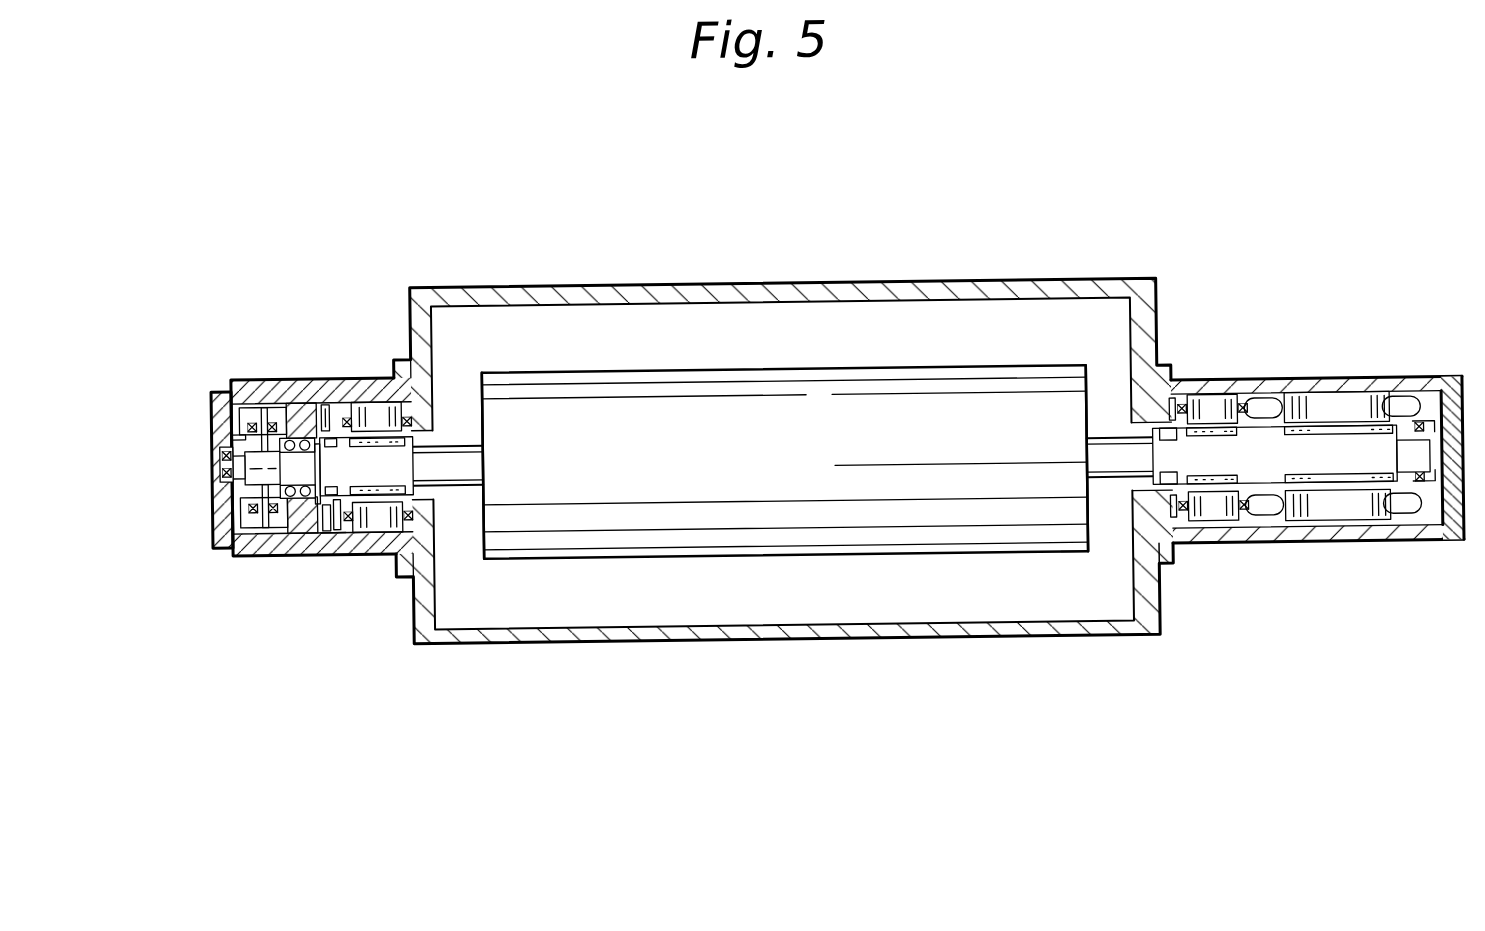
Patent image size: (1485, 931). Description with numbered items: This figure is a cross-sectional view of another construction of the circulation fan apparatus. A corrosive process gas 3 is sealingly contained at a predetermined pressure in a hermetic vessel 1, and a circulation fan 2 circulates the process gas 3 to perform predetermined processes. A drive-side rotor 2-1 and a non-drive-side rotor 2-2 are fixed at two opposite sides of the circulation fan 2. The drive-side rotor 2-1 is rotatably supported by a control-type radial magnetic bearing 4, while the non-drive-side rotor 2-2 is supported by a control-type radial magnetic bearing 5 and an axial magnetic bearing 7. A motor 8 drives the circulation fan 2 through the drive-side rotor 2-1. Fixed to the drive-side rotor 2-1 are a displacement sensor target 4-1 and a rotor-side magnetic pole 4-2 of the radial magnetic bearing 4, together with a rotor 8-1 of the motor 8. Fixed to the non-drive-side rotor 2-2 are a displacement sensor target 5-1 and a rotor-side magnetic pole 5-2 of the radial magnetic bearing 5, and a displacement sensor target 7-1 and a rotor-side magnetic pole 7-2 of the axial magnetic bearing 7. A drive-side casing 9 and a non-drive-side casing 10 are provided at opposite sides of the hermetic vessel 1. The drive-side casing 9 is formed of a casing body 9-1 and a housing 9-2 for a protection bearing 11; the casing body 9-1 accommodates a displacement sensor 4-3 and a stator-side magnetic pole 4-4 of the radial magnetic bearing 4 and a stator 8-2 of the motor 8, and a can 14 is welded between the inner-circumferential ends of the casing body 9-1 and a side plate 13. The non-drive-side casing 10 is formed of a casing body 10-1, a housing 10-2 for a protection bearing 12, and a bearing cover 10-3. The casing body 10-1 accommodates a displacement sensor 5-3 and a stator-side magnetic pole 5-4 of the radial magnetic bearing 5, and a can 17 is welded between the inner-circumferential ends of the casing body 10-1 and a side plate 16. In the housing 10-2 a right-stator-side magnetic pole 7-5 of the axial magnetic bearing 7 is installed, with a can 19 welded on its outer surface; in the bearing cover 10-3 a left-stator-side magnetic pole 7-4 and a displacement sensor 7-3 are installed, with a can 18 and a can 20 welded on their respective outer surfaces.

The hermetic vessel 1 is at (727, 292).
The circulation fan 2 is at (853, 393).
The drive-side rotor 2-1 is at (1103, 437).
The non-drive-side rotor 2-2 is at (455, 441).
The process gas 3 is at (1112, 549).
The radial magnetic bearing 4 is at (1196, 536).
The displacement sensor target 4-1 is at (1140, 472).
The rotor-side magnetic pole 4-2 is at (1228, 466).
The displacement sensor 4-3 is at (1166, 552).
The stator-side magnetic pole 4-4 is at (1221, 527).
The radial magnetic bearing 5 is at (362, 538).
The displacement sensor target 5-1 is at (403, 446).
The rotor-side magnetic pole 5-2 is at (408, 460).
The displacement sensor 5-3 is at (329, 551).
The stator-side magnetic pole 5-4 is at (386, 527).
The axial magnetic bearing 7 is at (210, 475).
The displacement sensor target 7-1 is at (255, 471).
The rotor-side magnetic pole 7-2 is at (262, 550).
The displacement sensor 7-3 is at (213, 461).
The left-stator-side magnetic pole 7-4 is at (219, 546).
The right-stator-side magnetic pole 7-5 is at (287, 551).
The motor 8 is at (1311, 385).
The rotor 8-1 is at (1348, 467).
The stator 8-2 is at (1381, 538).
The drive-side casing 9 is at (1326, 568).
The casing body 9-1 is at (1216, 393).
The housing 9-2 is at (1451, 386).
The non-drive-side casing 10 is at (296, 269).
The casing body 10-1 is at (356, 372).
The housing 10-2 is at (266, 400).
The bearing cover 10-3 is at (231, 373).
The protection bearing 11 is at (1439, 538).
The protection bearing 12 is at (301, 398).
The side plate 13 is at (1406, 404).
The can 14 is at (1341, 400).
The side plate 16 is at (324, 399).
The can 17 is at (386, 400).
The can 18 is at (257, 400).
The can 19 is at (278, 432).
The can 20 is at (230, 431).